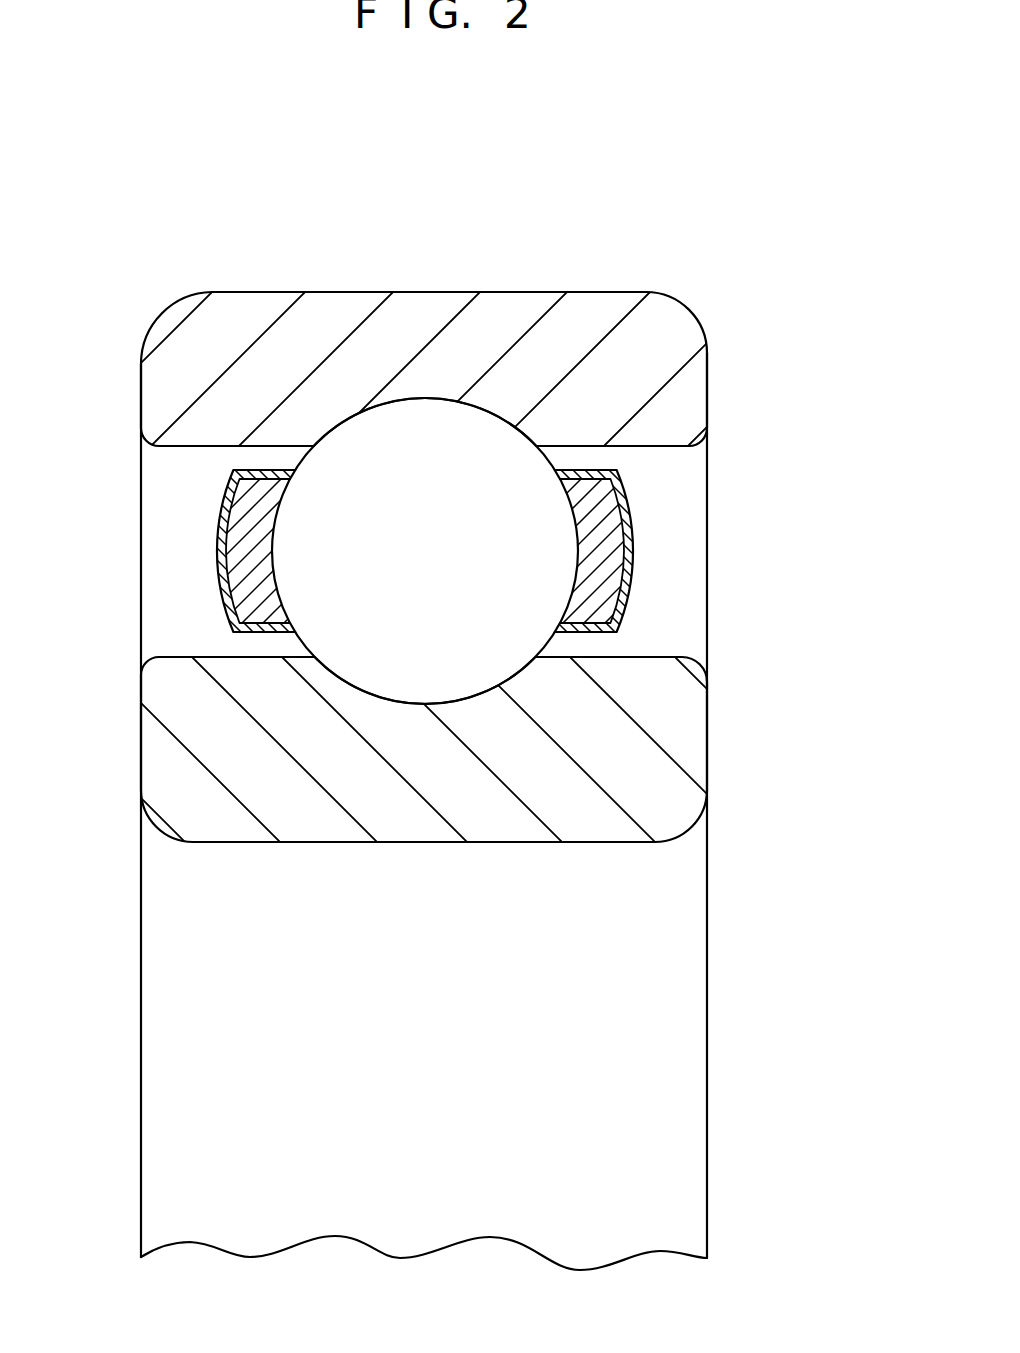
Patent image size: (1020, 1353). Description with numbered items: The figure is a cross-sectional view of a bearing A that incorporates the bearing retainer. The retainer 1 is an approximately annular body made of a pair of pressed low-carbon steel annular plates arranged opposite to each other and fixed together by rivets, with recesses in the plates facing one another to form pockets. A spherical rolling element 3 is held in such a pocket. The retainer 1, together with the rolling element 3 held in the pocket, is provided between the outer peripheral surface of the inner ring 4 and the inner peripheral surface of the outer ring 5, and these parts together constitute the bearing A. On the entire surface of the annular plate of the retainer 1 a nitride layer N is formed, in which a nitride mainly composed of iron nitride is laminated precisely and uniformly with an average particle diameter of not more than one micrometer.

The bearing A is at (748, 333).
The outer ring 5 is at (612, 307).
The inner ring 4 is at (688, 727).
The rolling element 3 is at (412, 432).
The nitride layer N is at (215, 588).
The retainer 1 is at (601, 575).